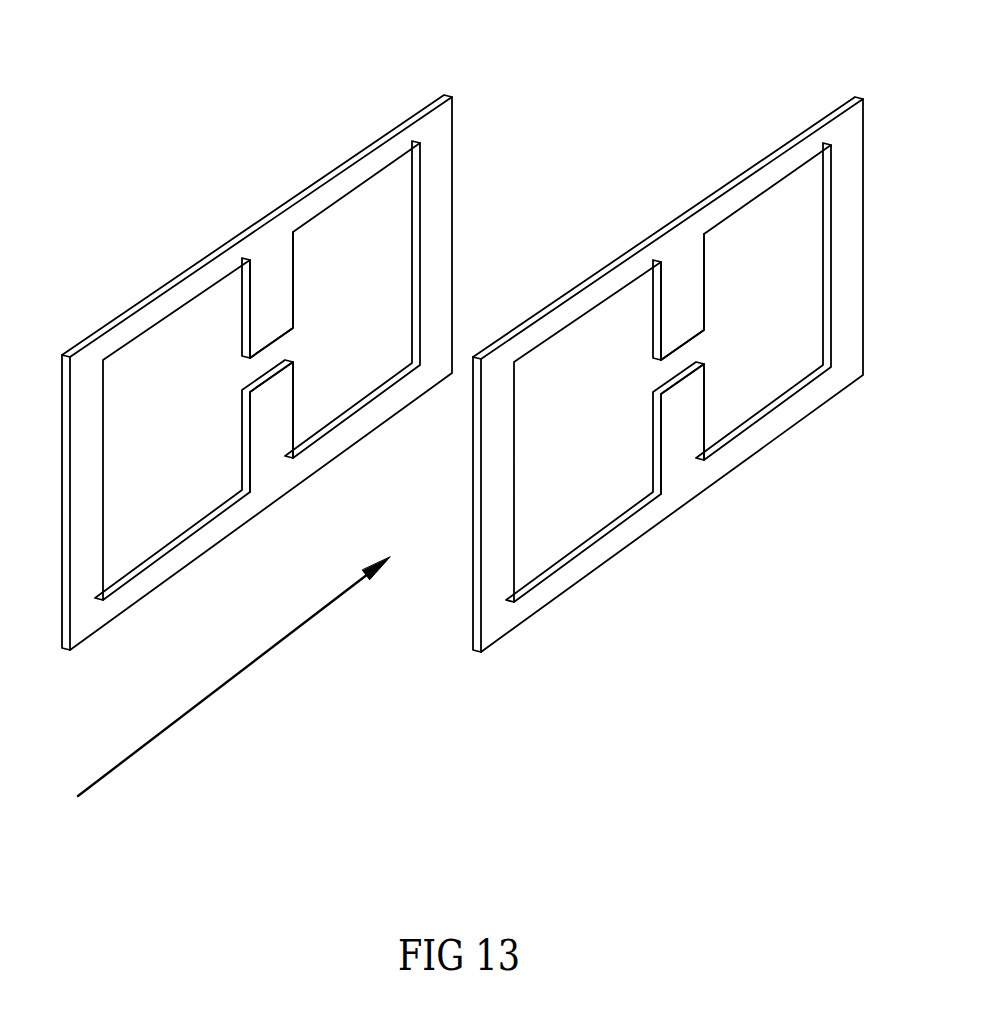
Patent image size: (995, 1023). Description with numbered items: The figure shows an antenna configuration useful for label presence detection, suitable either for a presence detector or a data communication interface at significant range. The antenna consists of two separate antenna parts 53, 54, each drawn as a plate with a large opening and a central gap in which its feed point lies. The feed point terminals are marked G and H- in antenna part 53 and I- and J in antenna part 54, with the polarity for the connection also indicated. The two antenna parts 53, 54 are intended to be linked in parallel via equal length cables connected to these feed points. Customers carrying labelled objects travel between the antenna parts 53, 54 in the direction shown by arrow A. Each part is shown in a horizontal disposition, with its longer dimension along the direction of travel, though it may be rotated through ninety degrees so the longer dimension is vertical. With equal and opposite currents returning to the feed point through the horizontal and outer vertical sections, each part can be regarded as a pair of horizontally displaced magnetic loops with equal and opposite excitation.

The antenna part 53 is at (257, 342).
The antenna part 54 is at (668, 343).
The arrow indicating direction of travel A is at (233, 667).
The feed point H H- is at (271, 427).
The feed point I I- is at (682, 297).